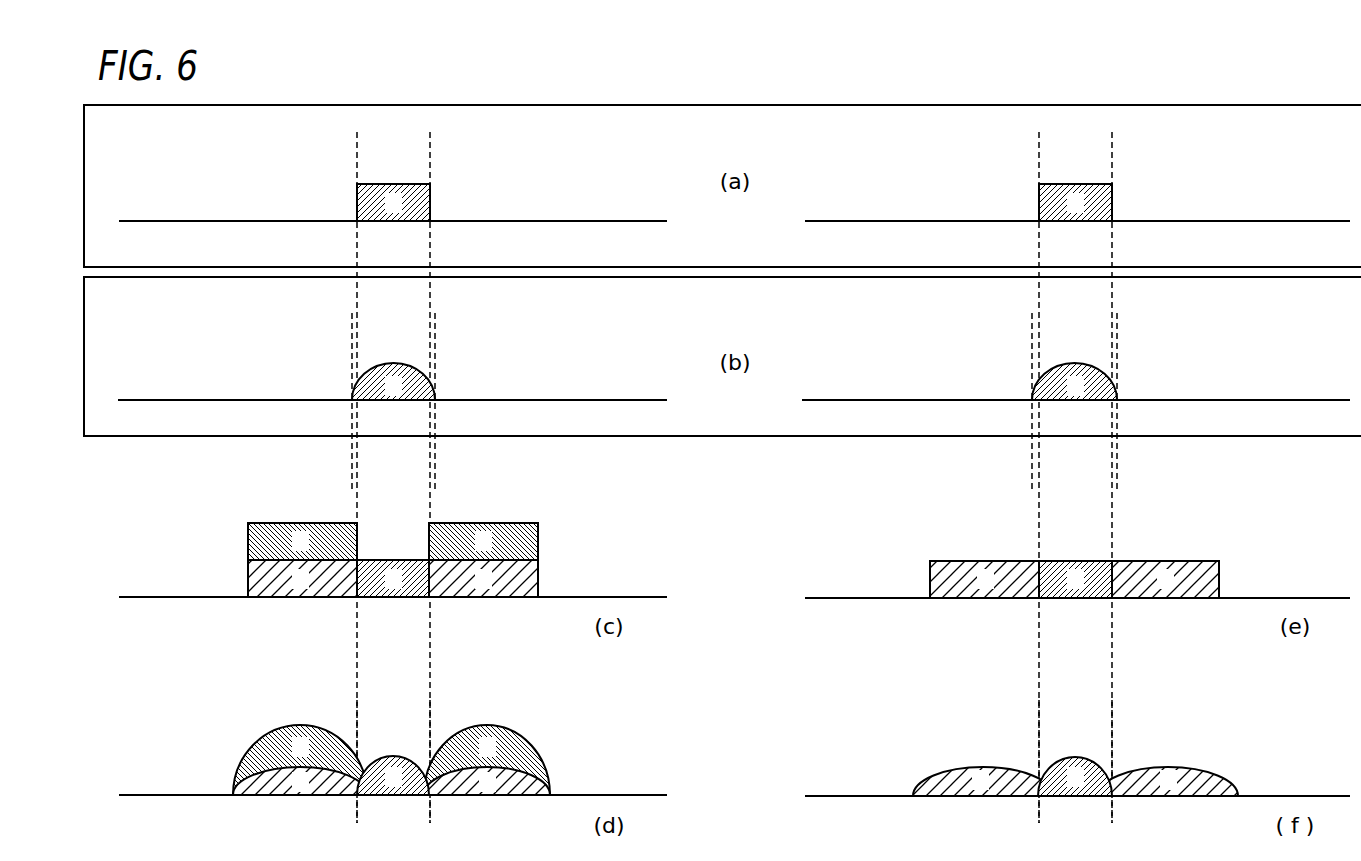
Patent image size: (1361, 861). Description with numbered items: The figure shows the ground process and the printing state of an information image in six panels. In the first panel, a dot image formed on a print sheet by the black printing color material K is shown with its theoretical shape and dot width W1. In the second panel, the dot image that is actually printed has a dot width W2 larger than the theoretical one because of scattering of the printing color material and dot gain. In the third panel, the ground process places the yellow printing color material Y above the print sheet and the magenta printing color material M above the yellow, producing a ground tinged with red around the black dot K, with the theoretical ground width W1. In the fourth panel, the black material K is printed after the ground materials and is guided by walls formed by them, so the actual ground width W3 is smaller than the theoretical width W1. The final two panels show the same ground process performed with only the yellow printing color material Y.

The theoretical dot width W1 is at (357, 164).
The actual dot width W2 is at (1117, 343).
The actual ground width W3 is at (357, 737).
The black printing color material K is at (734, 490).
The magenta printing color material M is at (391, 659).
The yellow printing color material Y is at (735, 678).